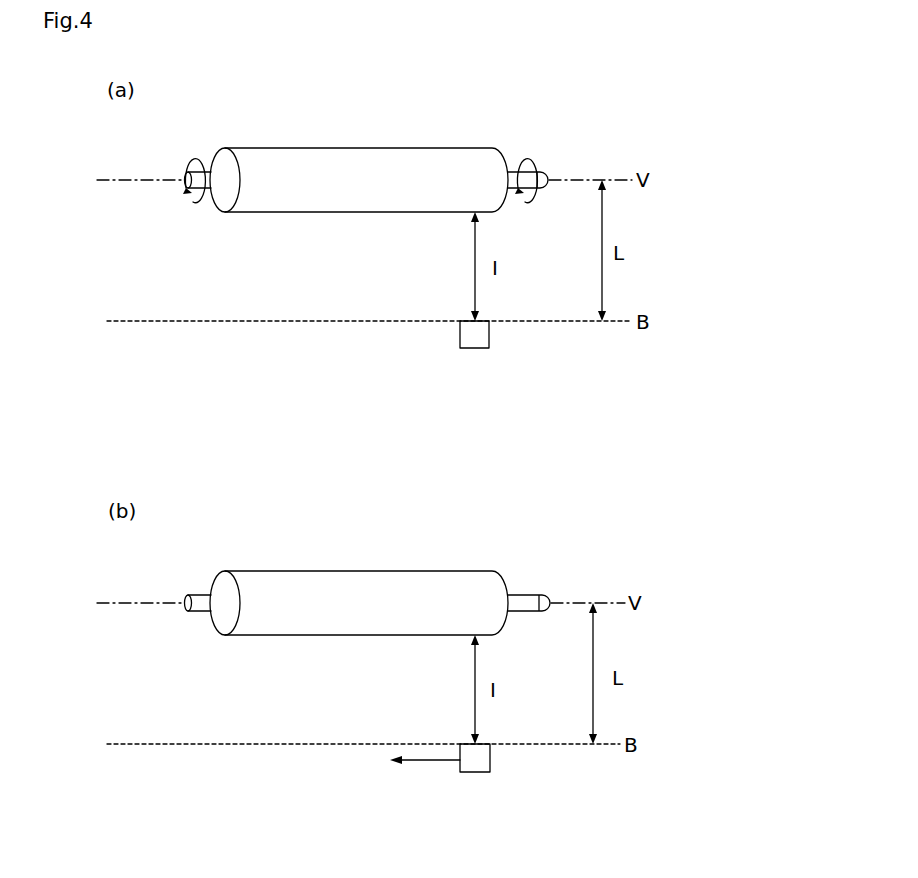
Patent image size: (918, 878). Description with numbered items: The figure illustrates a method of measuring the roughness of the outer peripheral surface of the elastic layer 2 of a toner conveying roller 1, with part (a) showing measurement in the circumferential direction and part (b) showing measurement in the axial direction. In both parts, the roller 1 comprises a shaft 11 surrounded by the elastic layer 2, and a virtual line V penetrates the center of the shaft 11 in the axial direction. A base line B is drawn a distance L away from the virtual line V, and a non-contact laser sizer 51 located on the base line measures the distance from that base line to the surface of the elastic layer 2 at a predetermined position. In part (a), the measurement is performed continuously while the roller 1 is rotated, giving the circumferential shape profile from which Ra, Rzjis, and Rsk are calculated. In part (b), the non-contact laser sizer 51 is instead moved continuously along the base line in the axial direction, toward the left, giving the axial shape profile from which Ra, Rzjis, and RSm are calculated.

The roller 1 is at (569, 138).
The elastic layer 2 is at (445, 166).
The shaft 11 is at (517, 168).
The non-contact laser sizer 51 is at (479, 337).